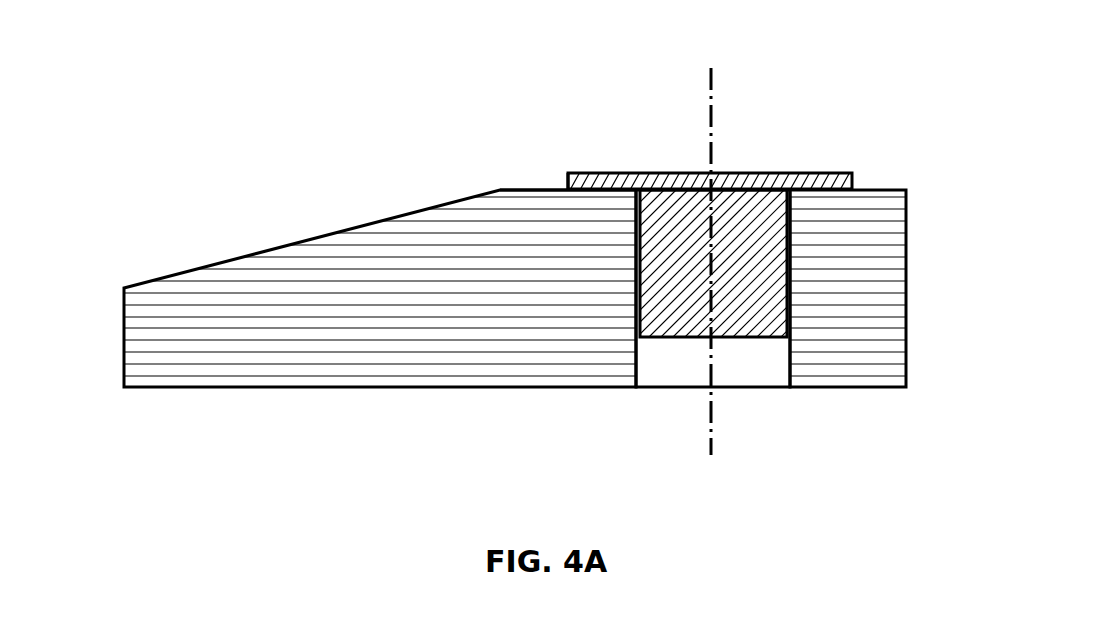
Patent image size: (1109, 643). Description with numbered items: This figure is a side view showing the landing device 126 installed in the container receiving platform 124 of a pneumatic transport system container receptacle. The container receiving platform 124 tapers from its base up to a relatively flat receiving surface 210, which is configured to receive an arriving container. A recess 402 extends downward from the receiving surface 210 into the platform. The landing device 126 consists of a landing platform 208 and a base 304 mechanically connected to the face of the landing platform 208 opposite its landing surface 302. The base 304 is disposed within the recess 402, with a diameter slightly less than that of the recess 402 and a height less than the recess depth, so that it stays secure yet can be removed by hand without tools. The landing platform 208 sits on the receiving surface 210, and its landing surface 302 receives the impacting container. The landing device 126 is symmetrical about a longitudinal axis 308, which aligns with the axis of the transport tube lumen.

The container receiving platform 124 is at (278, 243).
The landing device 126 is at (567, 175).
The receiving surface 210 is at (543, 188).
The landing surface 302 is at (640, 170).
The longitudinal axis 308 is at (710, 81).
The landing platform 208 is at (853, 173).
The base 304 is at (787, 279).
The recess 402 is at (790, 349).